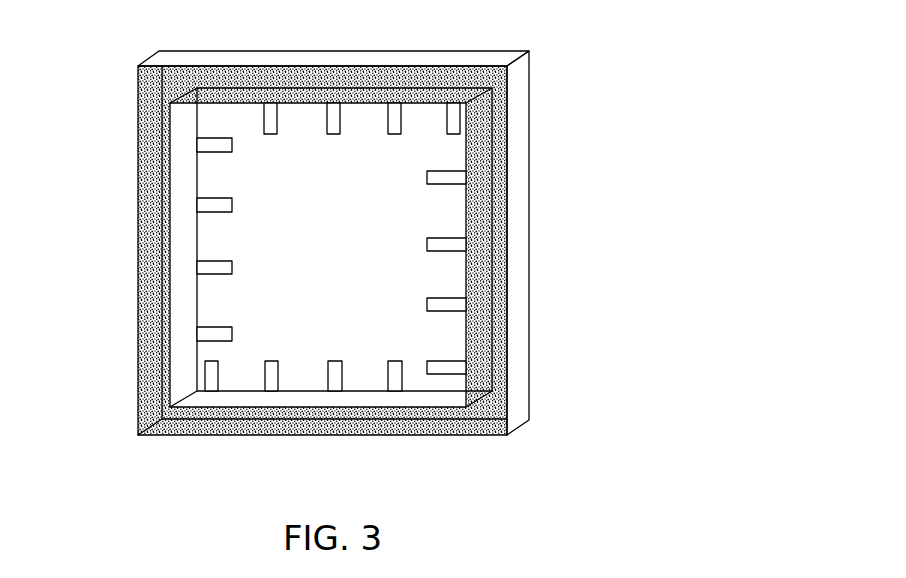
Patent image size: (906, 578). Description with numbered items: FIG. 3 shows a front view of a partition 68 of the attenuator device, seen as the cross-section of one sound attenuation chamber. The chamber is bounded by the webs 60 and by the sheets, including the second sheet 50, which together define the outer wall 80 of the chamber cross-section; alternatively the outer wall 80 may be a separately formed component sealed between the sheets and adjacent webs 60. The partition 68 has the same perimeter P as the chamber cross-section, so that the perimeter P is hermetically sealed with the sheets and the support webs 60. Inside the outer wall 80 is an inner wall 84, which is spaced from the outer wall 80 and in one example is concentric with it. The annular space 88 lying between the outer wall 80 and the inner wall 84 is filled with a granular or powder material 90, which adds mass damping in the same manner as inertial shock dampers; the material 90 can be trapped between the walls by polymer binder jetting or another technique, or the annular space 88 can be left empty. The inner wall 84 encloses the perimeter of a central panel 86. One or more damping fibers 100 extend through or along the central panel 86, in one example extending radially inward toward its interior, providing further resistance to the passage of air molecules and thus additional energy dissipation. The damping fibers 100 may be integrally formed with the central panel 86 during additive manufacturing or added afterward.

The second sheet 50 is at (325, 430).
The webs 60 is at (517, 185).
The partition 68 is at (86, 148).
The outer wall 80 is at (545, 88).
The inner wall 84 is at (435, 97).
The central panel 86 is at (338, 246).
The annular space 88 is at (466, 72).
The granular or powder material 90 is at (428, 422).
The damping fibers 100 is at (232, 268).
The perimeter P is at (332, 50).